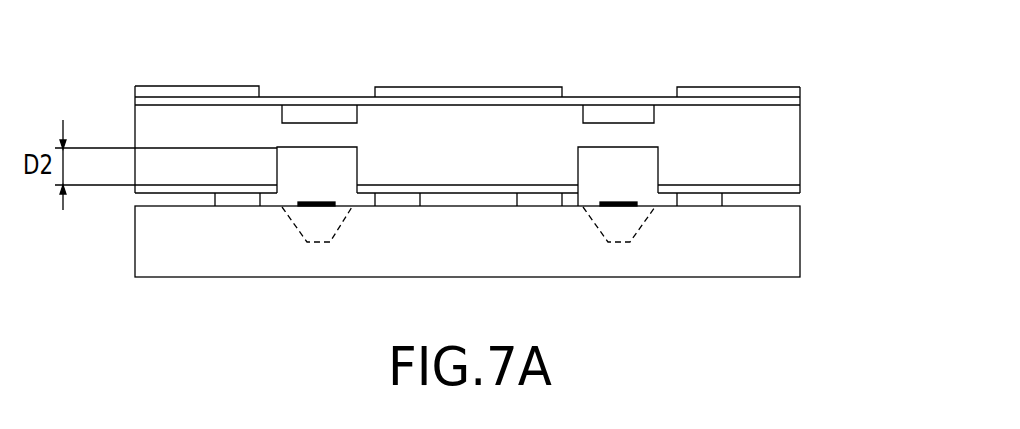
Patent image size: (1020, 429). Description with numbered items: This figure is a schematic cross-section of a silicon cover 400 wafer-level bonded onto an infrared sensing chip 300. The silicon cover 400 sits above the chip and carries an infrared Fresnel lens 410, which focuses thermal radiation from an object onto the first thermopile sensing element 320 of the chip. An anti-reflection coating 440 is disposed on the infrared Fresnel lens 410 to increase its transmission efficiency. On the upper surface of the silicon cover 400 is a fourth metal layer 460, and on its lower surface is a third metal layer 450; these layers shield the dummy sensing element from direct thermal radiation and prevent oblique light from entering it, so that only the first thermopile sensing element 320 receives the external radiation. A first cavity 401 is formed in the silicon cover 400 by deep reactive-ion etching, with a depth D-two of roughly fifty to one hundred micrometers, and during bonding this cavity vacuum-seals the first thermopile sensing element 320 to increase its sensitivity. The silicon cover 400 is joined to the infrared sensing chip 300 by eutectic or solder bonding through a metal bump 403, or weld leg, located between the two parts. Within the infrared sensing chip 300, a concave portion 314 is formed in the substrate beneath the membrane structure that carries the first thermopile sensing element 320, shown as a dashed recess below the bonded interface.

The infrared sensing chip 300 is at (793, 247).
The concave portion 314 is at (307, 222).
The first thermopile sensing element 320 is at (310, 202).
The silicon cover 400 is at (793, 123).
The first cavity 401 is at (348, 165).
The metal bump 403 is at (218, 200).
The infrared Fresnel lens 410 is at (328, 111).
The anti-reflection coating 440 is at (308, 99).
The third metal layer 450 is at (793, 190).
The fourth metal layer 460 is at (172, 90).